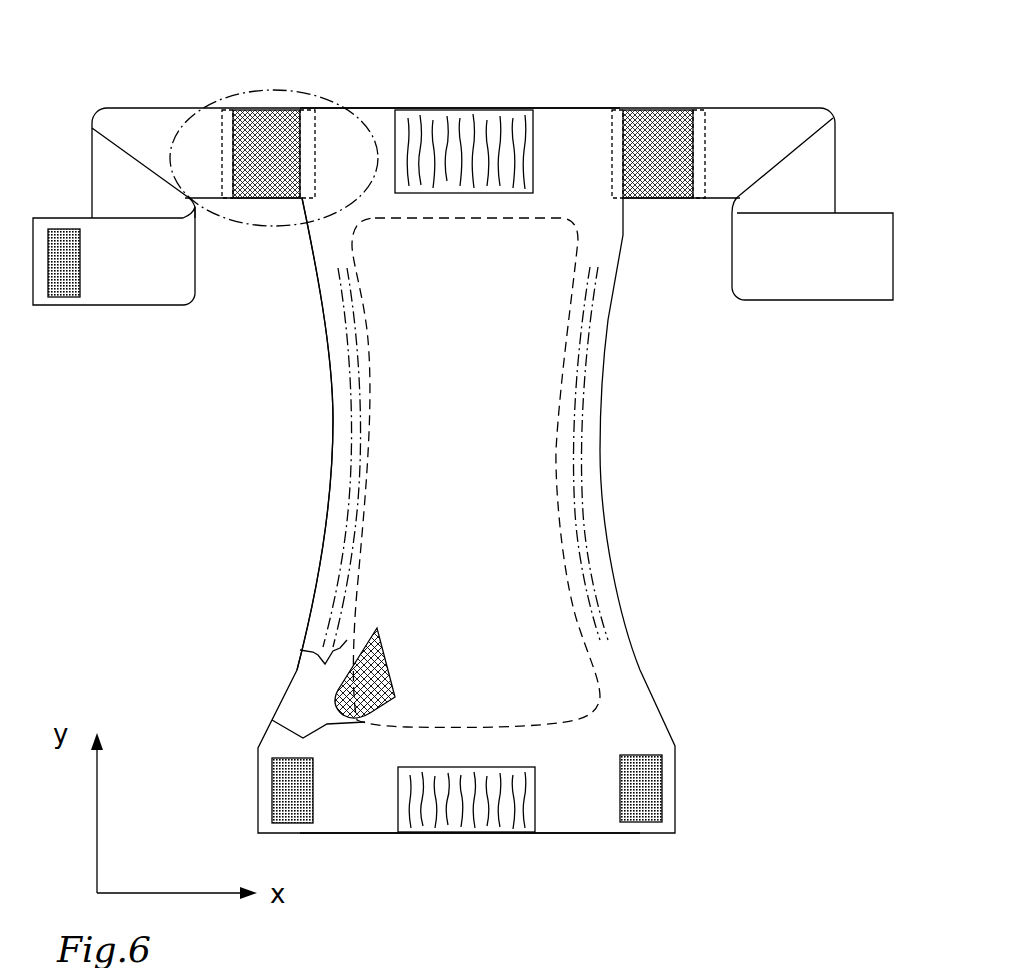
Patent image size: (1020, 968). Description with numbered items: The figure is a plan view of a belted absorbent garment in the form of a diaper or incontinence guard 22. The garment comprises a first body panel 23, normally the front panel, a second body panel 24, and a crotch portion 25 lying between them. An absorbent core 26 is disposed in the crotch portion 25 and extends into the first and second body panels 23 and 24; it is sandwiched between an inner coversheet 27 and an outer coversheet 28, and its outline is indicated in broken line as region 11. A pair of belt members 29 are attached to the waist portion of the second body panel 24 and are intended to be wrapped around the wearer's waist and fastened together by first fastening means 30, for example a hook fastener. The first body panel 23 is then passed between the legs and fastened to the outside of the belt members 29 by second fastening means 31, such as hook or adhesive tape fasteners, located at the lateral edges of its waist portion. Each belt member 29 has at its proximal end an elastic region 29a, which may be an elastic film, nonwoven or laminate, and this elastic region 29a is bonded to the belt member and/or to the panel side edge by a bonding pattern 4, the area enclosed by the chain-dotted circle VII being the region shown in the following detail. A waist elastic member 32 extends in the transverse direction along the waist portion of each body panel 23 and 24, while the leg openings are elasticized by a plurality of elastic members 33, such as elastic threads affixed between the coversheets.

The diaper or incontinence guard 22 is at (803, 75).
The first body panel 23 is at (583, 797).
The second body panel 24 is at (460, 76).
The crotch portion 25 is at (333, 410).
The absorbent core 26 is at (518, 568).
The inner coversheet 27 is at (382, 761).
The outer coversheet 28 is at (310, 680).
The belt members 29 is at (133, 290).
The elastic region 29a is at (258, 117).
The first fastening means 30 is at (62, 295).
The second fastening means 31 is at (280, 822).
The waist elastic member 32 is at (457, 123).
The elastic members 33 is at (570, 430).
The bonding pattern 4 is at (620, 110).
The absorbent core 11 is at (580, 230).
The section VII is at (218, 100).